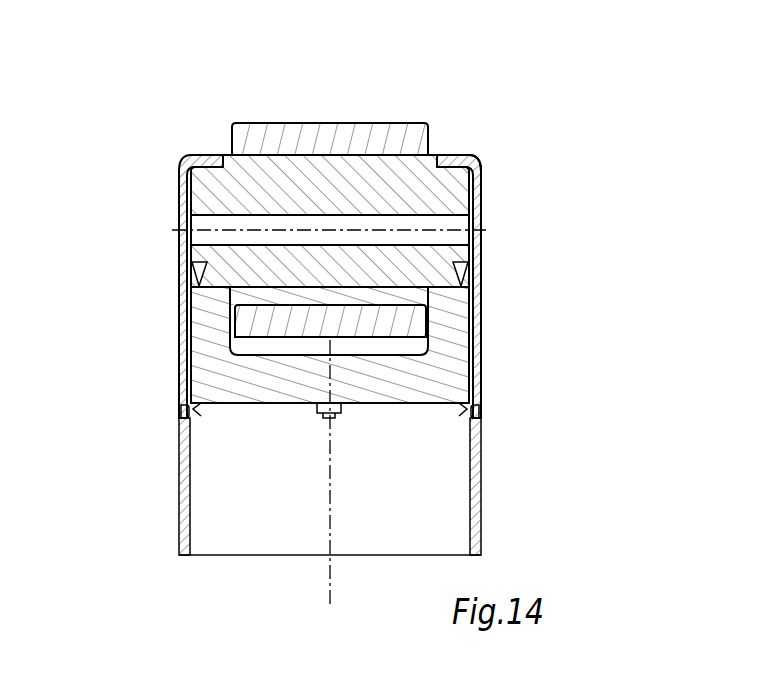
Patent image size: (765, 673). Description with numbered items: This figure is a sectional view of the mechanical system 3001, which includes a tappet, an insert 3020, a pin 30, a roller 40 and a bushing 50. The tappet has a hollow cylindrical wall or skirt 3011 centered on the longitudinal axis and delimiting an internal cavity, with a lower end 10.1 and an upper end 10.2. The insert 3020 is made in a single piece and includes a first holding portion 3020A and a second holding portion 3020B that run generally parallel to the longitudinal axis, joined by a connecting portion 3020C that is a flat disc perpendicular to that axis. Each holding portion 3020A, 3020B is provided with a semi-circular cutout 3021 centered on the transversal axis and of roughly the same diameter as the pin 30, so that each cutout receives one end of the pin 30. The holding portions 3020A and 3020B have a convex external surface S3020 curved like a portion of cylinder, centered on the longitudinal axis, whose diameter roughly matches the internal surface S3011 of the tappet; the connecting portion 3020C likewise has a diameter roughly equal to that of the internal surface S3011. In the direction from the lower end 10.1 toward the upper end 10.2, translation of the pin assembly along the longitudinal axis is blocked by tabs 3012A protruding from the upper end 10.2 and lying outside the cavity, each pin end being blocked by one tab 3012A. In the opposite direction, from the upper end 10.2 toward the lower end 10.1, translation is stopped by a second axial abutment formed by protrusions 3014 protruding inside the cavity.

The mechanical system 3001 is at (531, 145).
The lower end of tappet 10.1 is at (185, 558).
The upper end of tappet 10.2 is at (212, 160).
The tab 3012A is at (443, 158).
The pin 30 is at (448, 195).
The roller 40 is at (328, 130).
The bushing 50 is at (385, 153).
The cutout 3021 is at (215, 268).
The insert 3020 is at (448, 377).
The first holding portion 3020A is at (208, 313).
The second holding portion 3020B is at (455, 297).
The connecting portion 3020C is at (372, 396).
The convex external surface S3020 is at (180, 358).
The internal surface of tappet S3011 is at (463, 318).
The protrusion 3014 is at (200, 412).
The skirt 3011 is at (183, 490).